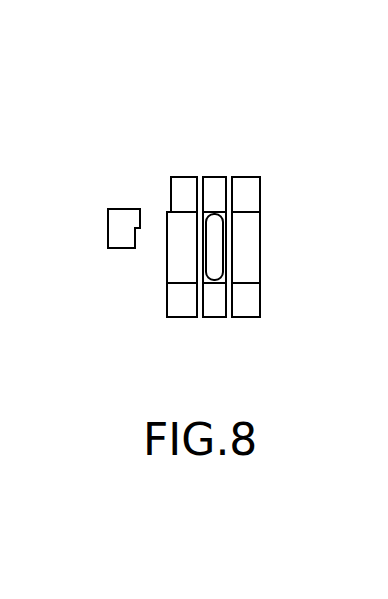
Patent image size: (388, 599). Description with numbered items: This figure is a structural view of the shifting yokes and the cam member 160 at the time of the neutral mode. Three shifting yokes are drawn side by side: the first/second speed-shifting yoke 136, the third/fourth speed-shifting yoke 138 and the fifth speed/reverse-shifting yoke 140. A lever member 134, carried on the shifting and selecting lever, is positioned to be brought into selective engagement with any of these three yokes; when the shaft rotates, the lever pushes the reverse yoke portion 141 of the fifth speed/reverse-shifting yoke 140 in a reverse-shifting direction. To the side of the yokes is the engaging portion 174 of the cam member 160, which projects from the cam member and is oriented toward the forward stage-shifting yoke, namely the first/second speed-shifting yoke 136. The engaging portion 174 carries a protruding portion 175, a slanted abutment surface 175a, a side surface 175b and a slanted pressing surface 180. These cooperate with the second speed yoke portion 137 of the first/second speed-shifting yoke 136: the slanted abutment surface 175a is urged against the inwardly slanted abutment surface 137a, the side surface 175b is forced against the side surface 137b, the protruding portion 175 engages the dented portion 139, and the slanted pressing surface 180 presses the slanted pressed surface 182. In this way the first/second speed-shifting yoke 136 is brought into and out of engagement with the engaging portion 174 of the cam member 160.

The lever member 134 is at (218, 238).
The first/second speed-shifting yoke 136 is at (177, 310).
The second speed yoke portion 137 is at (222, 256).
The abutment surface 137a is at (162, 234).
The side surface 137b is at (161, 205).
The third/fourth speed-shifting yoke 138 is at (258, 277).
The dented portion 139 is at (183, 183).
The fifth speed/reverse-shifting yoke 140 is at (250, 310).
The reverse yoke portion 141 is at (253, 193).
The cam member 160 is at (107, 253).
The engaging portion 174 is at (122, 231).
The protruding portion 175 is at (138, 220).
The slanted abutment surface 175a is at (139, 209).
The side surface 175b is at (143, 205).
The slanted pressing surface 180 is at (143, 236).
The slanted pressed surface 182 is at (177, 198).